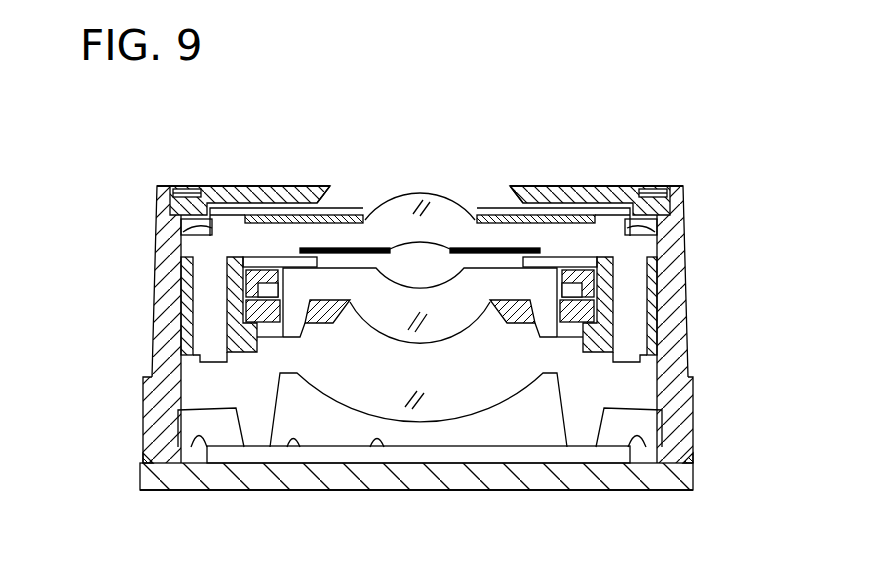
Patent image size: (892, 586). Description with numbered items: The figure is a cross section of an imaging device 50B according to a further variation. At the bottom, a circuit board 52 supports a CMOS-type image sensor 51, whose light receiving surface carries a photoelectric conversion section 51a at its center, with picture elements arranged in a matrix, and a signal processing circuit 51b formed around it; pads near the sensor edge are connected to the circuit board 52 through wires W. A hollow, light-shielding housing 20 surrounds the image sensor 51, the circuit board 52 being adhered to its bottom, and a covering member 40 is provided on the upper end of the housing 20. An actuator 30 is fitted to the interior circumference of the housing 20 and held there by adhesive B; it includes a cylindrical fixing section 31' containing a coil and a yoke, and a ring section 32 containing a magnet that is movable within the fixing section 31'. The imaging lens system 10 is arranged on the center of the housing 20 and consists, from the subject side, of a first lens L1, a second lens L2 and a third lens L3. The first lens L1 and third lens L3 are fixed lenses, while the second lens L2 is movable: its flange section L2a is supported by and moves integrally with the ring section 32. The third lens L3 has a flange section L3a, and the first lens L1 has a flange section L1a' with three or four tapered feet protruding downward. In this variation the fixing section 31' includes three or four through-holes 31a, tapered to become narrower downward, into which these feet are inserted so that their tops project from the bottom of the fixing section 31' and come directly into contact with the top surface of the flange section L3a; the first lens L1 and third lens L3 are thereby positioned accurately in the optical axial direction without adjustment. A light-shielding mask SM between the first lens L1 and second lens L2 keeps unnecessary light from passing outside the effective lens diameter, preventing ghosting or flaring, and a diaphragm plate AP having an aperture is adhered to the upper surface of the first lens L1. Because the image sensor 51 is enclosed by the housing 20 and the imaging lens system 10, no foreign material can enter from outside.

The imaging lens system 10 is at (358, 185).
The imaging device 50B is at (676, 160).
The covering member 40 is at (258, 186).
The light-shielding mask SM is at (392, 246).
The first lens L1 is at (437, 205).
The diaphragm plate AP is at (478, 212).
The adhesive B is at (650, 226).
The fixing section 31' is at (469, 297).
The actuator 30 is at (663, 293).
The ring section 32 is at (648, 334).
The through-holes 31a is at (205, 322).
The housing 20 is at (690, 392).
The wires W is at (190, 440).
The flange section L1a' is at (366, 264).
The flange section L3a is at (200, 393).
The signal processing circuit 51b is at (287, 447).
The photoelectric conversion section 51a is at (371, 447).
The third lens L3 is at (437, 405).
The image sensor 51 is at (497, 453).
The circuit board 52 is at (573, 477).
The flange section L2a is at (305, 330).
The second lens L2 is at (463, 318).